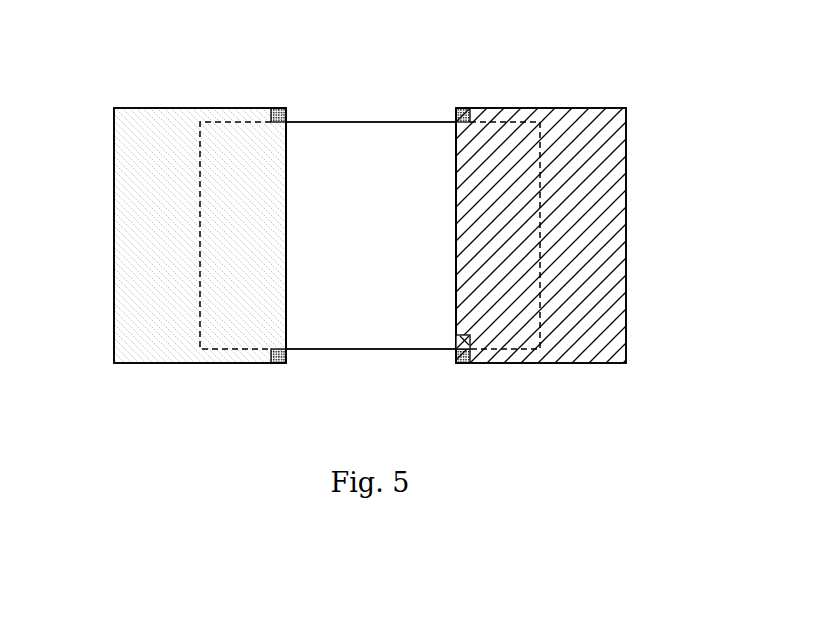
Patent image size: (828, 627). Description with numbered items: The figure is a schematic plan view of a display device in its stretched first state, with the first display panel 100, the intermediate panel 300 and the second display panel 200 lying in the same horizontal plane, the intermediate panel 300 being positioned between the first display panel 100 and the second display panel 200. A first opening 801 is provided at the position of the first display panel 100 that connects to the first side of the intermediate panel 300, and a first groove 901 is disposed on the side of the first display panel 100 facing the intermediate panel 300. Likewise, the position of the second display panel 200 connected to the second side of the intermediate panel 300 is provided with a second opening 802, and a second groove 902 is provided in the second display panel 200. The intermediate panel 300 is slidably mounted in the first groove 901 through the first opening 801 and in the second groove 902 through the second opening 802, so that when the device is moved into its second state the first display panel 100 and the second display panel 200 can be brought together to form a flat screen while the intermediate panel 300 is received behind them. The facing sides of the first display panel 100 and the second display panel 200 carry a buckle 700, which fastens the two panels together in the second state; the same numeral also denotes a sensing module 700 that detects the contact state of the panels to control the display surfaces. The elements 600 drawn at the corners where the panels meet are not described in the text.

The first display panel 100 is at (165, 235).
The second display panel 200 is at (576, 235).
The intermediate panel 300 is at (371, 222).
The sealant 600 is at (370, 241).
The buckle 700 is at (410, 363).
The first opening 801 is at (222, 204).
The second opening 802 is at (522, 206).
The first groove 901 is at (207, 361).
The second groove 902 is at (536, 362).